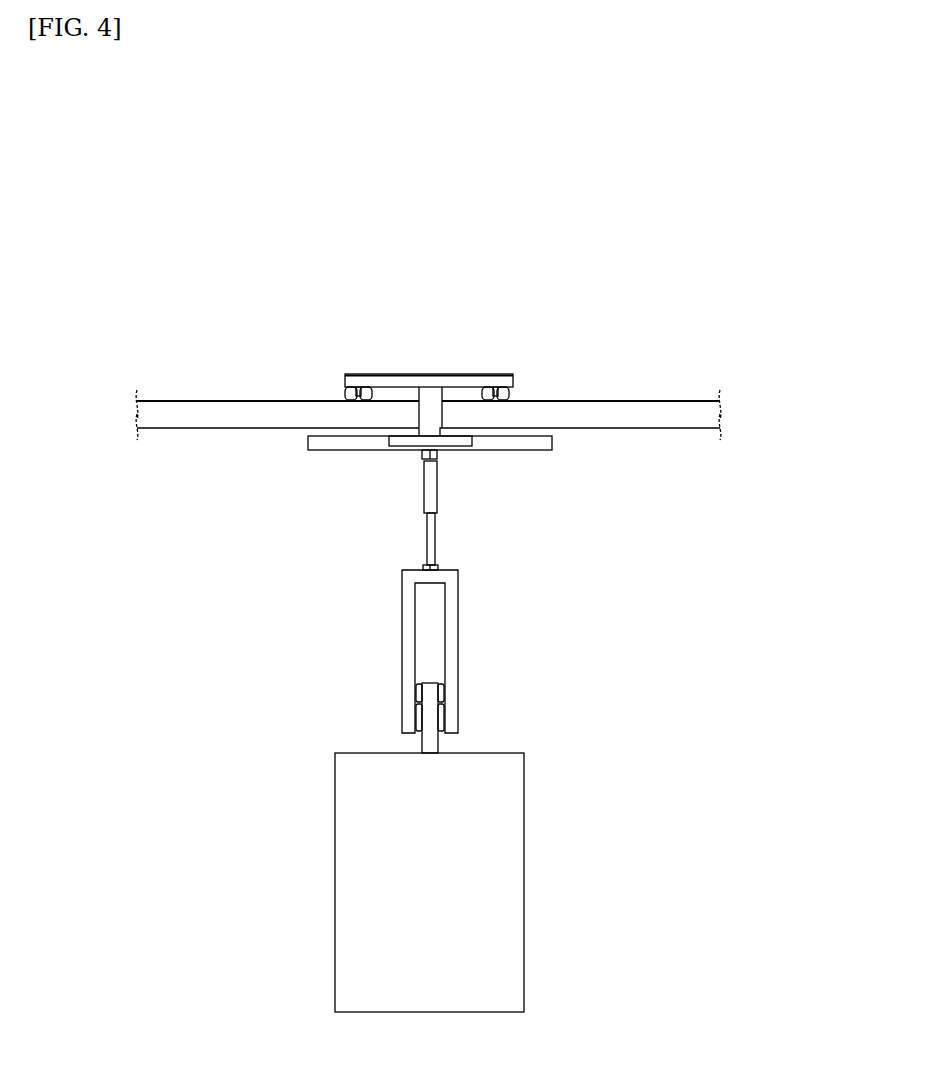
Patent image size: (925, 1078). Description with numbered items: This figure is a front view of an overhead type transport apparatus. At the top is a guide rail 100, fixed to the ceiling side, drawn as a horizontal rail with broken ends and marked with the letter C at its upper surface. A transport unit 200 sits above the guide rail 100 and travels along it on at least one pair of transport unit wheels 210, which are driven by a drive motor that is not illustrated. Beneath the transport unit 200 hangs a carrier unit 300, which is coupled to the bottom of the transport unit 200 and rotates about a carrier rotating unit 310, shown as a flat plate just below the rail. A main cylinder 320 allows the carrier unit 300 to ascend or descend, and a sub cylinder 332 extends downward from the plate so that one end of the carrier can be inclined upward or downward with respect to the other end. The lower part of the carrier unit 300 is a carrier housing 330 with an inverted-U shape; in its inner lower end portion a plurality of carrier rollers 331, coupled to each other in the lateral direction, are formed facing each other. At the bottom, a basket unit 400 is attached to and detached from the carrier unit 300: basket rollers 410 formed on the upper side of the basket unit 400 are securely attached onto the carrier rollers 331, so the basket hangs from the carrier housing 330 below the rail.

The ceiling rail C is at (587, 401).
The guide rail 100 is at (443, 410).
The transport unit 200 is at (431, 374).
The transport unit wheels 210 is at (347, 386).
The carrier unit 300 is at (459, 652).
The carrier rotating unit 310 is at (472, 451).
The main cylinder 320 is at (418, 429).
The carrier housing 330 is at (447, 584).
The carrier rollers 331 is at (445, 720).
The sub cylinder 332 is at (423, 488).
The basket unit 400 is at (525, 885).
The basket rollers 410 is at (415, 689).